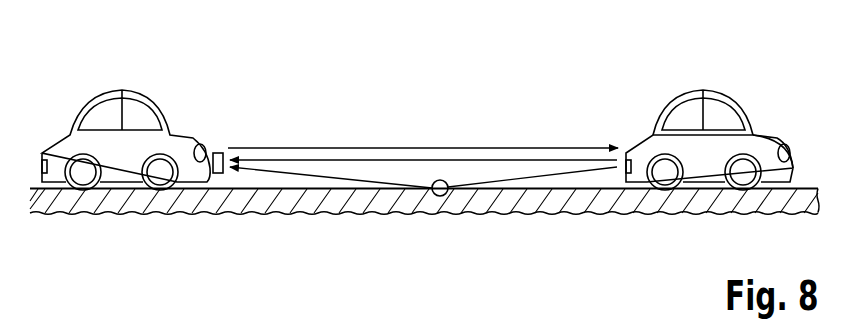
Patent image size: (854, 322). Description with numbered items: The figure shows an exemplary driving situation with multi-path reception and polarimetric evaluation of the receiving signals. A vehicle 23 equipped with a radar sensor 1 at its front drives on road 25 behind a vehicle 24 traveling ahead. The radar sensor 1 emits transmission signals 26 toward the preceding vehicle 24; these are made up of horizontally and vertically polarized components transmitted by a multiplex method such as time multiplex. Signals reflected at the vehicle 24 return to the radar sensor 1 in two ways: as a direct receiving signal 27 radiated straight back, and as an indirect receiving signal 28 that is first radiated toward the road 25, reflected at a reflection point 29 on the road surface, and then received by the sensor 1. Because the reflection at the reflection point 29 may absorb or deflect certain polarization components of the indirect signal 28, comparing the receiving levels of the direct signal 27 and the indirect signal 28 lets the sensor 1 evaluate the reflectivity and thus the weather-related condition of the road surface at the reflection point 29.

The radar sensor 1 is at (218, 153).
The vehicle 23 is at (122, 90).
The vehicle traveling ahead 24 is at (703, 90).
The road 25 is at (273, 190).
The transmission signals 26 is at (302, 148).
The direct receiving signal 27 is at (366, 160).
The indirect receiving signal 28 is at (521, 179).
The reflection point 29 is at (447, 196).